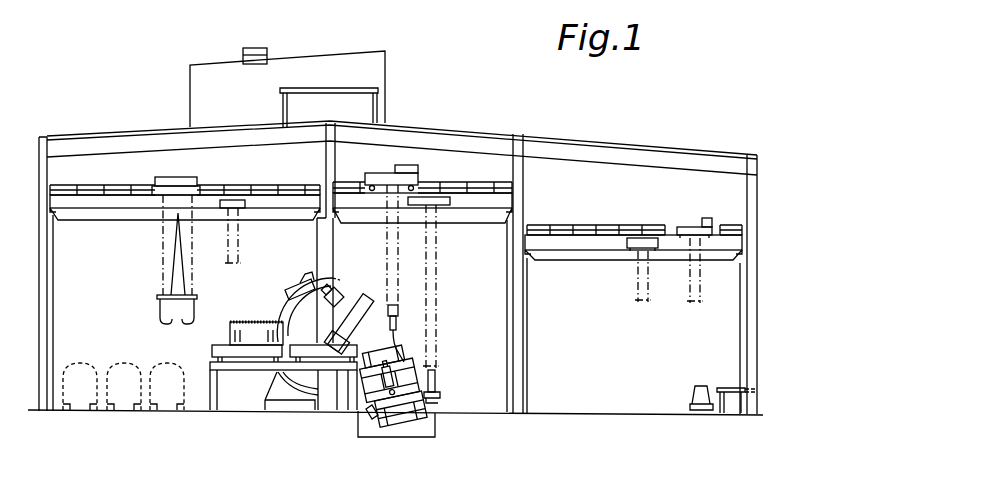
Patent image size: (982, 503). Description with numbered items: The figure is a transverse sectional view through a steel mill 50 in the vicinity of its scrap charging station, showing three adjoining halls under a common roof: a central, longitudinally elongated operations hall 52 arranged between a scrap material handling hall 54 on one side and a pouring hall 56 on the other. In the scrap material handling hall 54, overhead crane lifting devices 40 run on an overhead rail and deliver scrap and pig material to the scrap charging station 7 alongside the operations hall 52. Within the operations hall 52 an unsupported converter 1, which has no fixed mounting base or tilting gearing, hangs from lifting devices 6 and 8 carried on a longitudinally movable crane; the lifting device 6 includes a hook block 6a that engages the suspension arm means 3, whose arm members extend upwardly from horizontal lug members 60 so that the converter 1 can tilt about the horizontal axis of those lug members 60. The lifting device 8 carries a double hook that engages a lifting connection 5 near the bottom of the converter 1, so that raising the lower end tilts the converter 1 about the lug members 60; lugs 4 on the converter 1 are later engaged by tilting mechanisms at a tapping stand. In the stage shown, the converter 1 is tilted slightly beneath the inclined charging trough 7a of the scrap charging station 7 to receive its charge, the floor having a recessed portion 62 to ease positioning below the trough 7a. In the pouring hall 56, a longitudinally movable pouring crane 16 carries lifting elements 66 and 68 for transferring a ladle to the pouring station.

The converter 1 is at (404, 365).
The suspension arm means 3 is at (404, 382).
The lugs 4 is at (397, 412).
The lifting connection 5 is at (426, 409).
The lifting device 6 is at (396, 261).
The hook block 6a is at (398, 322).
The scrap charging station 7 is at (348, 311).
The charging trough 7a is at (336, 293).
The lifting device 8 is at (436, 381).
The pouring crane 16 is at (580, 253).
The overhead crane lifting devices 40 is at (108, 201).
The steel mill 50 is at (451, 119).
The operations hall 52 is at (477, 179).
The scrap material handling hall 54 is at (295, 172).
The pouring hall 56 is at (592, 207).
The lug members 60 is at (372, 402).
The recessed portion 62 is at (428, 428).
The lifting element 66 is at (637, 238).
The lifting element 68 is at (703, 219).